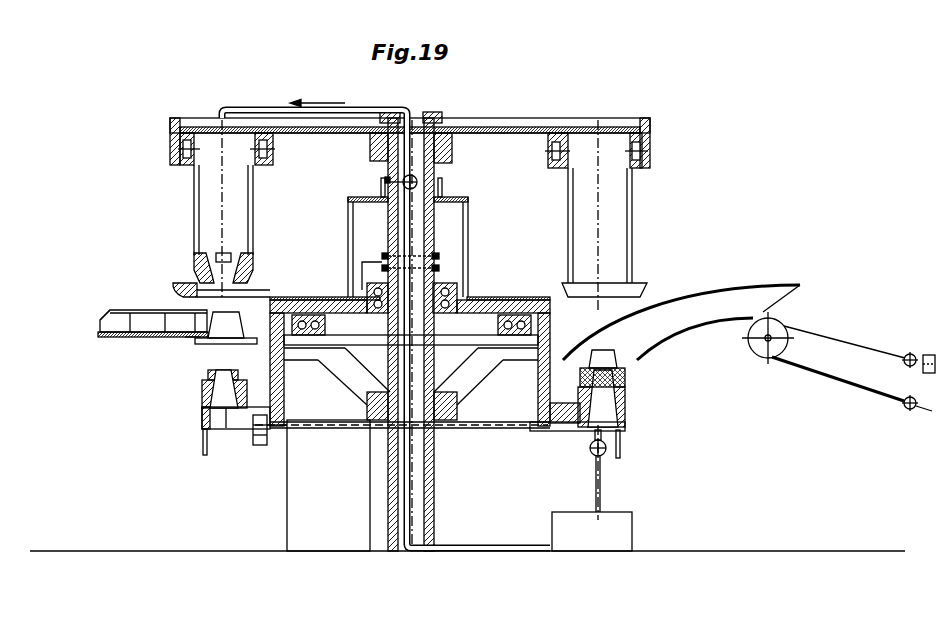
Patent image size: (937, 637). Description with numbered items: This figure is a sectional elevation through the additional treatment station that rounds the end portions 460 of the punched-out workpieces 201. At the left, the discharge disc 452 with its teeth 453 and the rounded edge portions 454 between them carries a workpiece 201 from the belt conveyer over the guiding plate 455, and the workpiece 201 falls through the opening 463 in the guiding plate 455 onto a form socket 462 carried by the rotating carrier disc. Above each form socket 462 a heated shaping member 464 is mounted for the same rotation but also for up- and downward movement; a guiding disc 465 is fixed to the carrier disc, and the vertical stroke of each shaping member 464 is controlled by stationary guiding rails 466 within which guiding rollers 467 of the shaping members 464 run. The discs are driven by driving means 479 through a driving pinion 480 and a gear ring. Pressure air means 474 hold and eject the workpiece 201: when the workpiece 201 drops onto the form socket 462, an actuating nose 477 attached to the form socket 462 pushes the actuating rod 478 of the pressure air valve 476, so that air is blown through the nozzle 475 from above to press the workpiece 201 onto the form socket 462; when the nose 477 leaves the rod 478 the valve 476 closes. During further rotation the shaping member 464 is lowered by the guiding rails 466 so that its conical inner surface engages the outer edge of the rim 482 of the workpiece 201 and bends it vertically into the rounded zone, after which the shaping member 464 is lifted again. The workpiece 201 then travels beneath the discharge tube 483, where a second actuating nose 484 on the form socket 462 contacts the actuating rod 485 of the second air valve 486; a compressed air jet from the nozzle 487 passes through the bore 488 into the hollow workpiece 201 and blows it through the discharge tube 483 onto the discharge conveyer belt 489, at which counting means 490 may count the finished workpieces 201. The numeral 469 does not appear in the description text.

The workpiece 201 is at (238, 325).
The rotating disc 452 is at (106, 321).
The teeth 453 is at (118, 313).
The rounded edge portions 454 is at (150, 316).
The guiding plate 455 is at (150, 338).
The rounded end portion 460 is at (626, 378).
The form socket 462 is at (203, 396).
The opening 463 is at (193, 340).
The heated shaping member 464 is at (251, 280).
The guiding disc 465 is at (505, 300).
The guiding rails 466 is at (181, 150).
The guiding rollers 467 is at (187, 160).
The cylinder 469 is at (195, 240).
The pressure air means 474 is at (633, 535).
The nozzle 475 is at (223, 118).
The pressure air valve 476 is at (418, 182).
The actuating nose 477 is at (381, 192).
The actuating rod 478 is at (386, 180).
The driving means 479 is at (328, 485).
The driving pinion 480 is at (267, 435).
The rim 482 is at (211, 344).
The discharge tube 483 is at (722, 286).
The second actuating nose 484 is at (204, 444).
The actuating rod 485 is at (588, 399).
The second air valve 486 is at (594, 458).
The nozzle 487 is at (590, 447).
The bore 488 is at (226, 428).
The discharge conveyer belt 489 is at (845, 347).
The counting means 490 is at (928, 354).